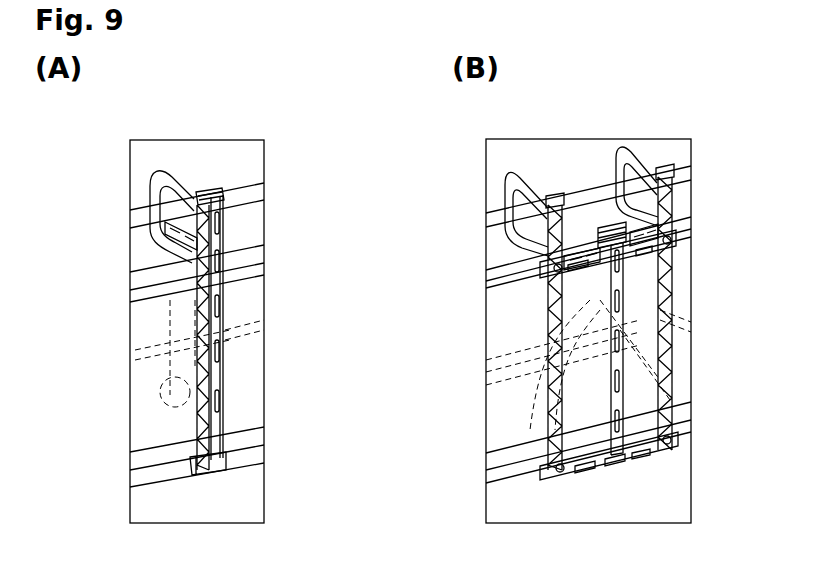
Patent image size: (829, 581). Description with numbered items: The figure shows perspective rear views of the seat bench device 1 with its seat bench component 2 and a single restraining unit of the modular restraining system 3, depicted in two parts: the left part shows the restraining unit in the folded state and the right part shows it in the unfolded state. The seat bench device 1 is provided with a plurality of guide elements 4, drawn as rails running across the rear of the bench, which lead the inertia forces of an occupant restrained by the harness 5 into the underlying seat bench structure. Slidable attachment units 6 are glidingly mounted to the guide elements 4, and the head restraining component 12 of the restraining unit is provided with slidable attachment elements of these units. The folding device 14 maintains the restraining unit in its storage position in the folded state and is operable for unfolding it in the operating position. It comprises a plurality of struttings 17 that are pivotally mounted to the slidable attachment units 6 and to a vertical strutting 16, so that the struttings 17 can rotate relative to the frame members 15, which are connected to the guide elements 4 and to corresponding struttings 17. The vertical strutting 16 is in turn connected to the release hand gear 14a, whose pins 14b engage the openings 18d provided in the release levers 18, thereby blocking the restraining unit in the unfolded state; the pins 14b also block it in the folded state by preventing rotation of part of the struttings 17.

The seat bench device 1 is at (104, 138).
The seat bench component 2 is at (123, 438).
The modular restraining system 3 is at (188, 193).
The guide elements 4 is at (257, 230).
The harness 5 is at (160, 338).
The slidable attachment units 6 is at (180, 283).
The head restraining component 12 is at (153, 187).
The folding device 14 is at (207, 190).
The release hand gear 14a is at (225, 195).
The pins 14b is at (186, 210).
The frame members 15 is at (188, 362).
The vertical strutting 16 is at (228, 303).
The struttings 17 is at (228, 248).
The release levers 18 is at (153, 240).
The openings 18d is at (150, 220).